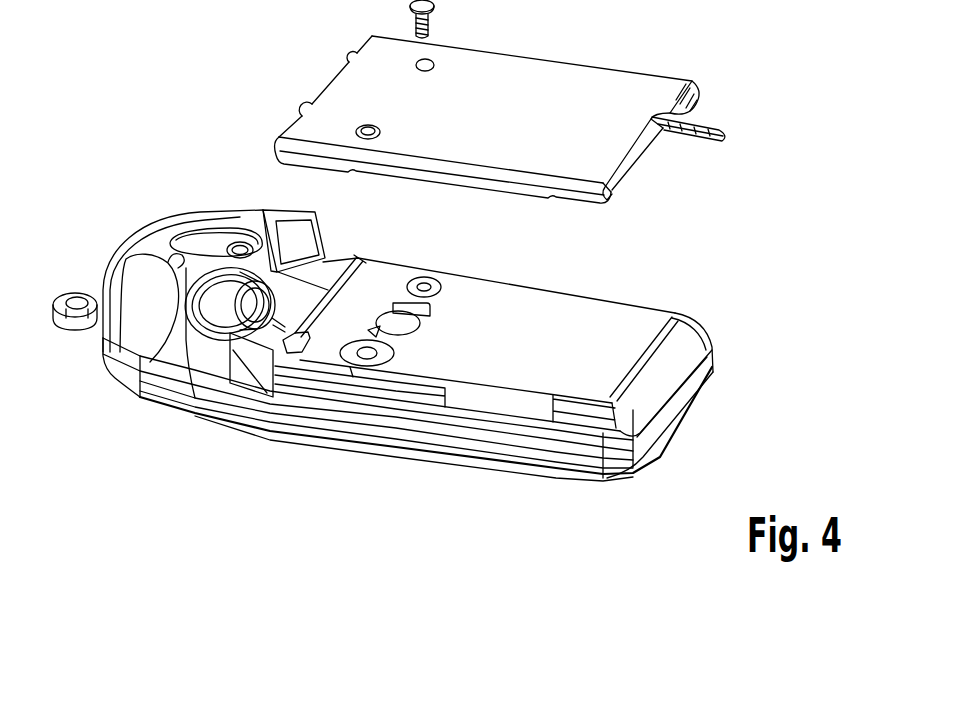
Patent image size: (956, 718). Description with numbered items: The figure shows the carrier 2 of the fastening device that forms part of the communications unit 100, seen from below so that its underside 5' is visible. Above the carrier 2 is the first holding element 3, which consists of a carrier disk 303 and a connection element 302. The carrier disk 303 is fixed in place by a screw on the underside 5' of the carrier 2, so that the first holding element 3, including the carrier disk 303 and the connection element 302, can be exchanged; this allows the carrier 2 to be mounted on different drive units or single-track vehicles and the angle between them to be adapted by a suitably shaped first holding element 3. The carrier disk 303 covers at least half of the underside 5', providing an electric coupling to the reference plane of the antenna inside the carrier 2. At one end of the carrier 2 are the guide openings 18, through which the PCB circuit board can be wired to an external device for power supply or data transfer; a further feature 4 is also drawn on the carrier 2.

The communications unit 100 is at (168, 173).
The carrier 2 is at (652, 320).
The first holding element 3 is at (658, 92).
The carrier disk 303 is at (567, 93).
The connection element 302 is at (717, 125).
The fastening eyelet 4 is at (73, 290).
The underside 5' is at (489, 321).
The guide openings 18 is at (231, 312).